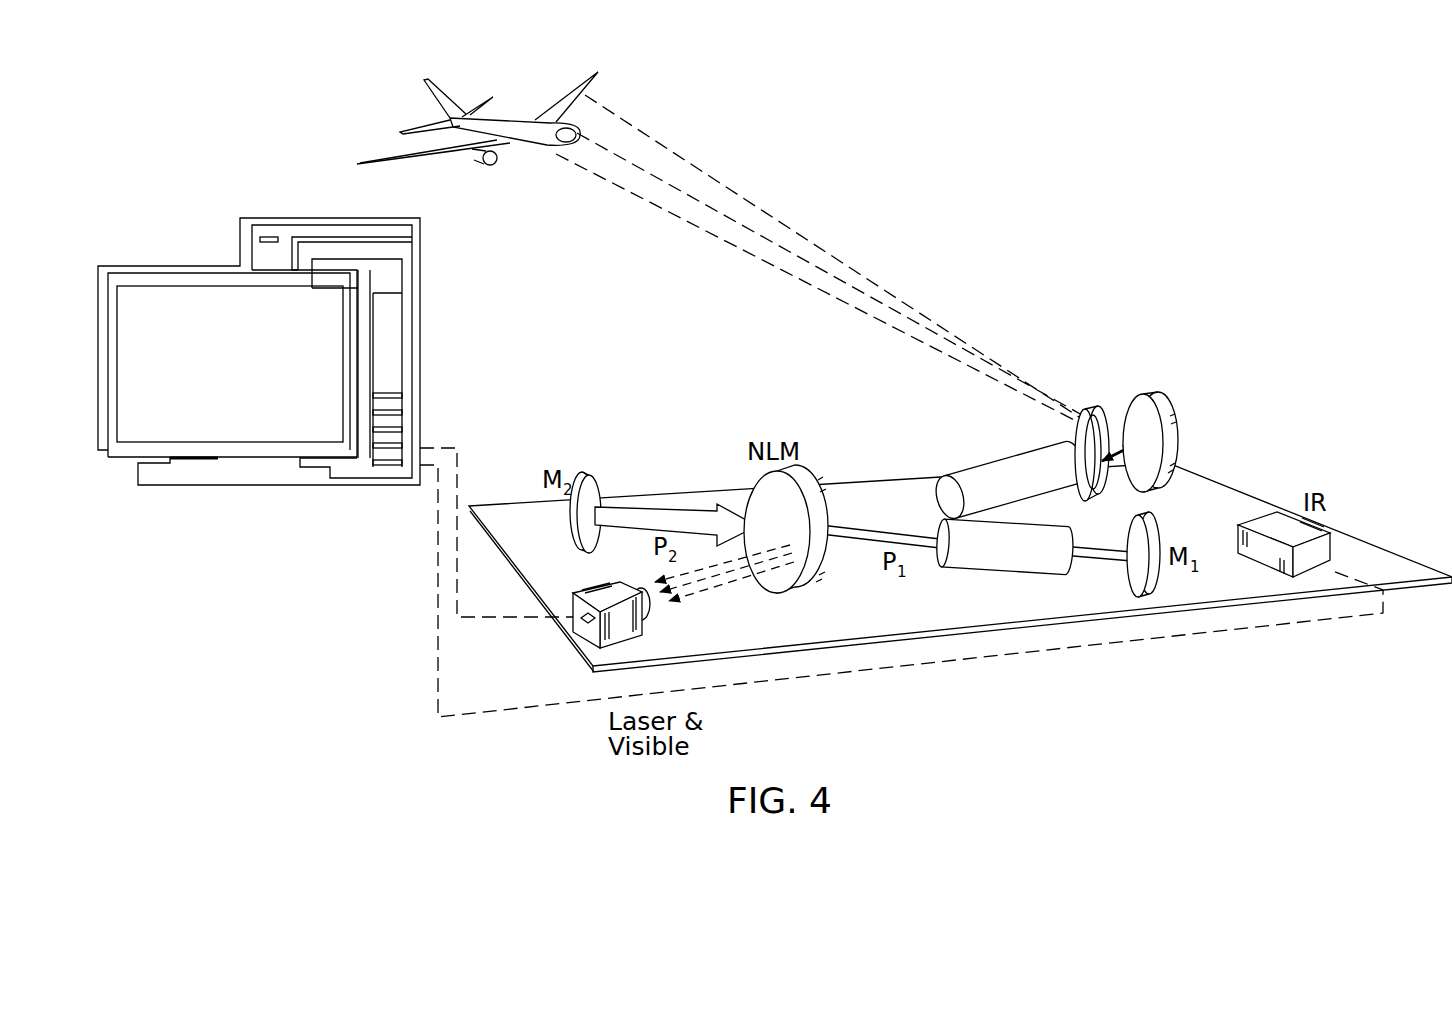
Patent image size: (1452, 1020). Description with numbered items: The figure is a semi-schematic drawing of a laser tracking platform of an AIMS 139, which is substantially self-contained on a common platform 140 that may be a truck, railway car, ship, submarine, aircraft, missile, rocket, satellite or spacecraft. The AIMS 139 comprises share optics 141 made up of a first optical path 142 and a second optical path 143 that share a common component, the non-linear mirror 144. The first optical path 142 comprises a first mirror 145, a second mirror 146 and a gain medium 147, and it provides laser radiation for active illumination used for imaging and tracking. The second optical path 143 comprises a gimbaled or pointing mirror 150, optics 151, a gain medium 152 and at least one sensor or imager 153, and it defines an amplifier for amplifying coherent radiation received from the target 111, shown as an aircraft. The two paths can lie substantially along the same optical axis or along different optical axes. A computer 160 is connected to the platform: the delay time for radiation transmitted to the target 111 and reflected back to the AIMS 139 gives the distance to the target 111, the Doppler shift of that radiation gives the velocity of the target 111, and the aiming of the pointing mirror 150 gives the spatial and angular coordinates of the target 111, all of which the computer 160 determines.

The target 111 is at (532, 147).
The AIMS 139 is at (1120, 323).
The platform 140 is at (1232, 487).
The share optics 141 is at (703, 410).
The first optical path 142 is at (986, 598).
The second optical path 143 is at (940, 417).
The non-linear mirror 144 is at (836, 455).
The first mirror 145 is at (1155, 592).
The second mirror 146 is at (587, 475).
The gain medium 147 is at (1047, 574).
The pointing mirror 150 is at (1178, 420).
The optics 151 is at (1100, 410).
The gain medium 152 is at (990, 458).
The sensor or imager 153 is at (577, 640).
The computer 160 is at (420, 337).